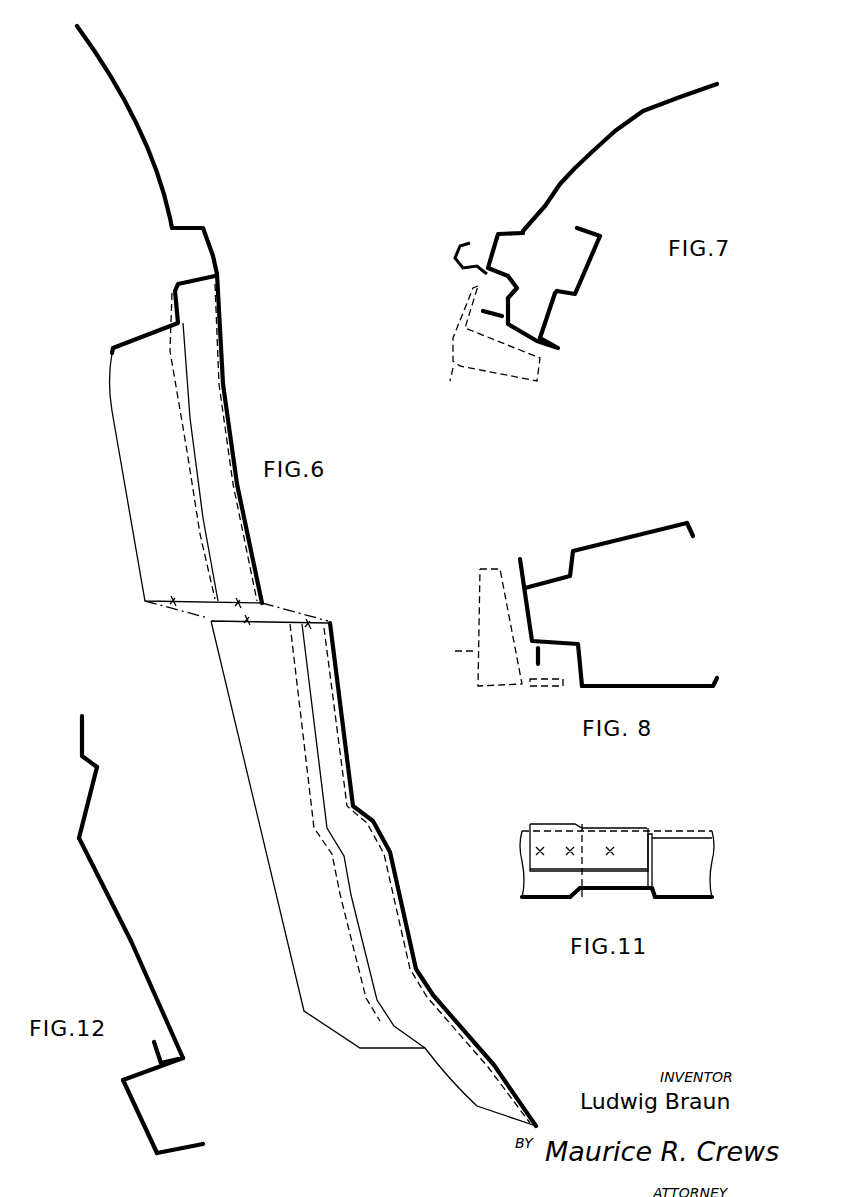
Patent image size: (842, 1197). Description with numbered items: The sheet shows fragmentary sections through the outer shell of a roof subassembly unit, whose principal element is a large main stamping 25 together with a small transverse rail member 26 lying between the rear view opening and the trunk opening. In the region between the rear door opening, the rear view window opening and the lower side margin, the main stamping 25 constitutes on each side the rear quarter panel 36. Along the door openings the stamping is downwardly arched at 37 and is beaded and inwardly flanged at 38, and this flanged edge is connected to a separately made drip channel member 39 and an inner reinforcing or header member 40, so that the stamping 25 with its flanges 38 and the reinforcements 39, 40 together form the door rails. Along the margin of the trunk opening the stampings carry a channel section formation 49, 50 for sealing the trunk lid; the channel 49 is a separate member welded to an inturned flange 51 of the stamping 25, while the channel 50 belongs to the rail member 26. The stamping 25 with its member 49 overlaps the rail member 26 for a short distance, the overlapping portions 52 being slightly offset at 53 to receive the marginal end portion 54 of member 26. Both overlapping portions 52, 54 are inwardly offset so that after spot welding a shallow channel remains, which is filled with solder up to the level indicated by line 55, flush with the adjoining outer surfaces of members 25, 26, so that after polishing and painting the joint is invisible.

In FIG. 6, the main stamping 25 is at (128, 129).
In FIG. 7, the main stamping 25 is at (690, 88).
In FIG. 11, the main stamping 25 is at (530, 904).
In FIG. 12, the main stamping 25 is at (92, 905).
In FIG. 11, the transverse rail member 26 is at (690, 898).
In FIG. 12, the transverse rail member 26 is at (131, 915).
In FIG. 6, the rear quarter panel 36 is at (332, 630).
In FIG. 8, the rear quarter panel 36 is at (682, 683).
In FIG. 6, the downwardly arched portion 37 is at (162, 157).
In FIG. 7, the downwardly arched portion 37 is at (565, 172).
In FIG. 6, the inwardly flanged bead 38 is at (147, 333).
In FIG. 7, the inwardly flanged bead 38 is at (518, 330).
In FIG. 8, the inwardly flanged bead 38 is at (532, 618).
In FIG. 7, the drip channel member 39 is at (457, 247).
In FIG. 7, the inner reinforcing member 40 is at (592, 272).
In FIG. 8, the inner reinforcing member 40 is at (618, 532).
In FIG. 11, the channel section member 49 is at (548, 814).
In FIG. 12, the channel section member 49 is at (122, 1108).
In FIG. 11, the channel section formation 50 is at (690, 835).
In FIG. 12, the channel section formation 50 is at (177, 1140).
In FIG. 11, the inturned flange 51 is at (530, 876).
In FIG. 12, the inturned flange 51 is at (160, 1045).
In FIG. 11, the overlapping portions 52 is at (622, 847).
In FIG. 12, the overlapping portions 52 is at (80, 787).
In FIG. 11, the offset 53 is at (578, 823).
In FIG. 11, the marginal end portion 54 is at (600, 895).
In FIG. 12, the marginal end portion 54 is at (88, 813).
In FIG. 11, the solder level line 55 is at (582, 897).
In FIG. 12, the solder level line 55 is at (143, 958).